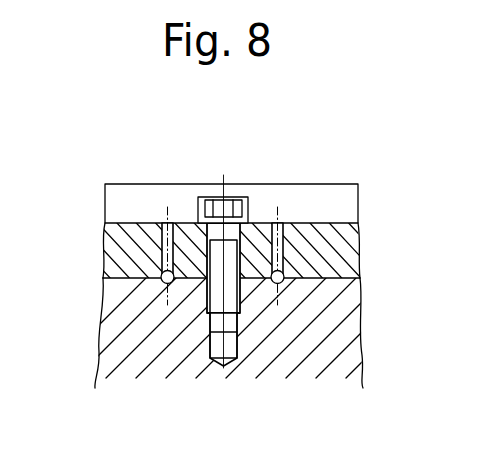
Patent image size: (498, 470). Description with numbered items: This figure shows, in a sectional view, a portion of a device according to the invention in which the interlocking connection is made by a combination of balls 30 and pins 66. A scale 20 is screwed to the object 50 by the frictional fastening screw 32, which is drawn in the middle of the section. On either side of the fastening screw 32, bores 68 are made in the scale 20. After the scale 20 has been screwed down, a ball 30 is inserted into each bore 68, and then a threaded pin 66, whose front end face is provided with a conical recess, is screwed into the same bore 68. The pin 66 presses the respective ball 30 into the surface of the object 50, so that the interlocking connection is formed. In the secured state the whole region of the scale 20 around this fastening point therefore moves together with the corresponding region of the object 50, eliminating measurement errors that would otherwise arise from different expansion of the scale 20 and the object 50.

The scale 20 is at (346, 205).
The fastening screw 32 is at (231, 186).
The bore 68 is at (165, 185).
The pin 66 is at (163, 241).
The ball 30 is at (163, 279).
The object 50 is at (122, 348).